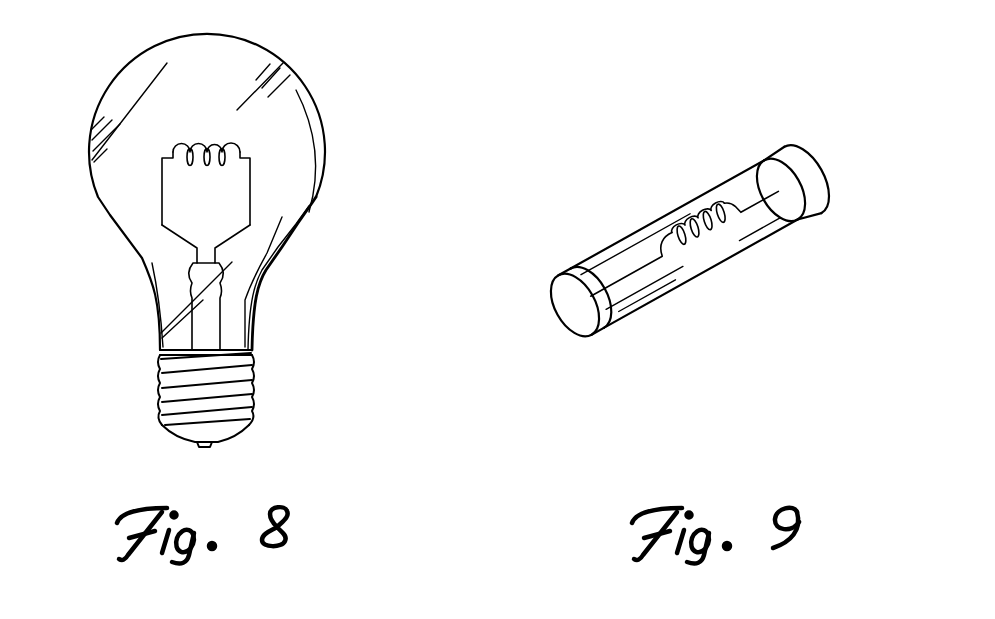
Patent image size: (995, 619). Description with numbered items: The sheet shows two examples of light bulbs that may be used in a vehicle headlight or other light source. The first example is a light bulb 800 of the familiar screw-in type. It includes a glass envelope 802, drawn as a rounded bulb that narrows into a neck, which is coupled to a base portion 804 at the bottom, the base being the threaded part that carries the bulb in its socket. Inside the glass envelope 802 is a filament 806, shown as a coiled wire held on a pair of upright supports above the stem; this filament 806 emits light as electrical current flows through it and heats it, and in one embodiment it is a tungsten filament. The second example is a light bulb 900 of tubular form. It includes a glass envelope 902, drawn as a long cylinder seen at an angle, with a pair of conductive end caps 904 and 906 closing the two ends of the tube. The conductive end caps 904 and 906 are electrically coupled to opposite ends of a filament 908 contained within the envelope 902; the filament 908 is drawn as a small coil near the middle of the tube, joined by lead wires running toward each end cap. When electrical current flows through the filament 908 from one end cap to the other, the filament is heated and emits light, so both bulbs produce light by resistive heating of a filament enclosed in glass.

In FIG. 8, the light bulb 800 is at (326, 57).
In FIG. 8, the glass envelope 802 is at (116, 79).
In FIG. 8, the base portion 804 is at (160, 385).
In FIG. 8, the filament 806 is at (172, 148).
In FIG. 9, the light bulb 900 is at (632, 161).
In FIG. 9, the glass envelope 902 is at (615, 245).
In FIG. 9, the conductive end cap 904 is at (603, 323).
In FIG. 9, the conductive end cap 906 is at (812, 198).
In FIG. 9, the filament 908 is at (683, 250).